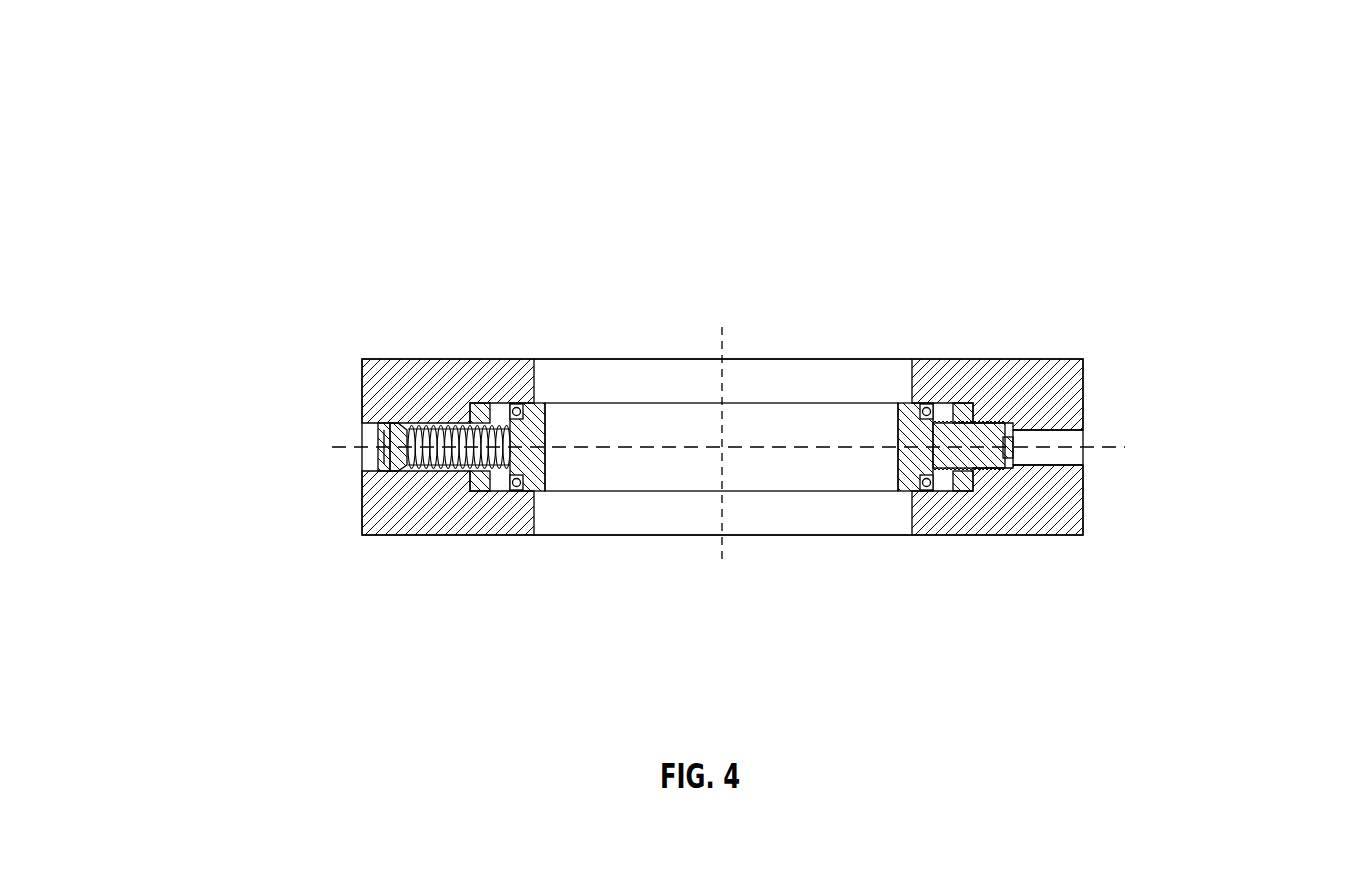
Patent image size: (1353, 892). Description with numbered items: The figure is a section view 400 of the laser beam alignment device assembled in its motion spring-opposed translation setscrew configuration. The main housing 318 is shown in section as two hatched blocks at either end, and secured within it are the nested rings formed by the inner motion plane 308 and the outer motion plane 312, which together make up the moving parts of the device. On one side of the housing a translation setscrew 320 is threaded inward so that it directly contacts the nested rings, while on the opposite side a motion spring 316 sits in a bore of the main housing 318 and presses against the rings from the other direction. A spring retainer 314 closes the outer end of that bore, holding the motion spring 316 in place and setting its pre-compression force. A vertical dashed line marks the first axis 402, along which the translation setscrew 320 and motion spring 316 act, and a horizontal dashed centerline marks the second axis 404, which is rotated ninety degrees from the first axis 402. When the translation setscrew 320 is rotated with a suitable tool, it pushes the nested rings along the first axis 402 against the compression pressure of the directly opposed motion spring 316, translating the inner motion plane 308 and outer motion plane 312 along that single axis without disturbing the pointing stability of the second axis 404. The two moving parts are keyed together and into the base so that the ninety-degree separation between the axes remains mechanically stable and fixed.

The section view 400 is at (1212, 143).
The inner motion plane 308 is at (758, 422).
The outer motion plane 312 is at (697, 513).
The spring retainer 314 is at (365, 432).
The motion spring 316 is at (430, 480).
The main housing 318 is at (388, 365).
The translation setscrew 320 is at (1075, 438).
The first axis 402 is at (720, 345).
The second axis 404 is at (1085, 450).